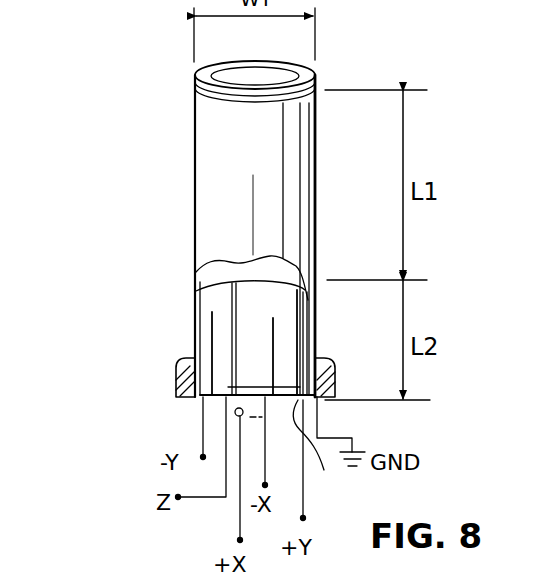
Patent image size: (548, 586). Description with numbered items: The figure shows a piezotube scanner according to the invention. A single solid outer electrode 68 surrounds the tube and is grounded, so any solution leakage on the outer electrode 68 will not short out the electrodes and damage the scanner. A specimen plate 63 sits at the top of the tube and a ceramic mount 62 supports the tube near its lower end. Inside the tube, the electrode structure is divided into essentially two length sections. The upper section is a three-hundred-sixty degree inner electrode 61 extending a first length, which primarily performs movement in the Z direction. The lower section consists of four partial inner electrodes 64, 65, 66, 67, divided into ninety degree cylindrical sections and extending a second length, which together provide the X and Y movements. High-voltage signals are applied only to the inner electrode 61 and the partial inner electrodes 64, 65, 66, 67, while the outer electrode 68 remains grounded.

The 360 degree inner electrode 61 is at (197, 276).
The ceramic mount 62 is at (176, 390).
The specimen plate 63 is at (205, 78).
The partial inner electrode 64 is at (186, 400).
The partial inner electrode 65 is at (284, 350).
The partial inner electrode 66 is at (329, 459).
The partial inner electrode 67 is at (196, 410).
The outer electrode 68 is at (316, 198).